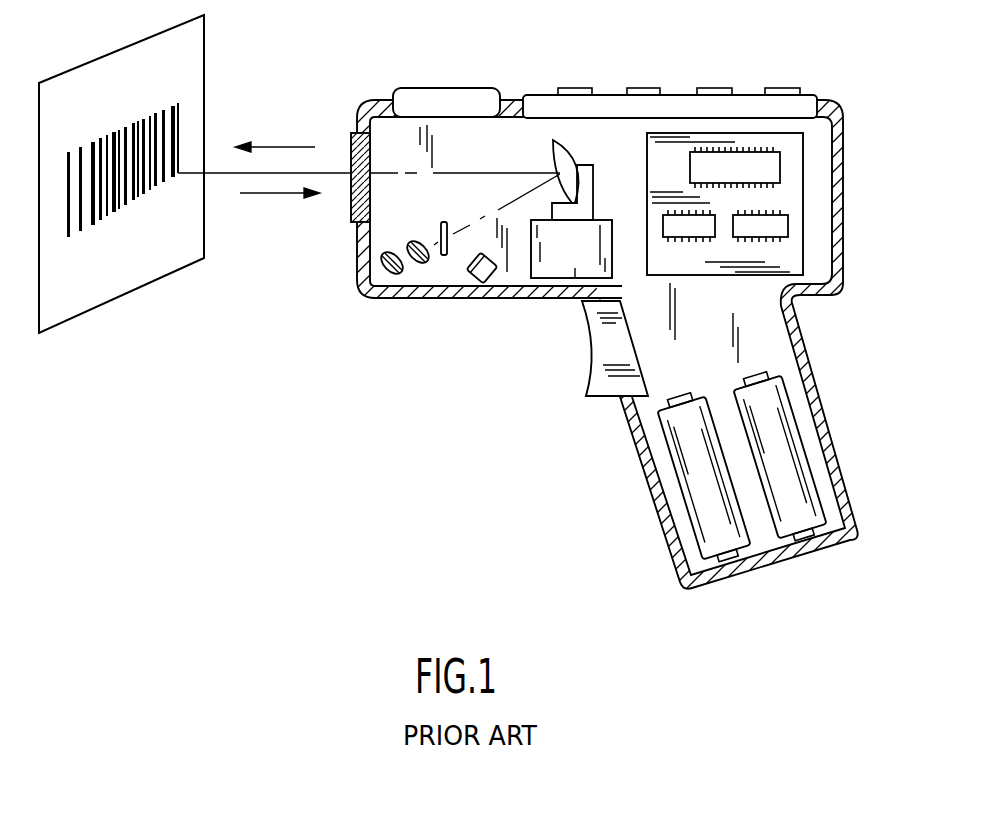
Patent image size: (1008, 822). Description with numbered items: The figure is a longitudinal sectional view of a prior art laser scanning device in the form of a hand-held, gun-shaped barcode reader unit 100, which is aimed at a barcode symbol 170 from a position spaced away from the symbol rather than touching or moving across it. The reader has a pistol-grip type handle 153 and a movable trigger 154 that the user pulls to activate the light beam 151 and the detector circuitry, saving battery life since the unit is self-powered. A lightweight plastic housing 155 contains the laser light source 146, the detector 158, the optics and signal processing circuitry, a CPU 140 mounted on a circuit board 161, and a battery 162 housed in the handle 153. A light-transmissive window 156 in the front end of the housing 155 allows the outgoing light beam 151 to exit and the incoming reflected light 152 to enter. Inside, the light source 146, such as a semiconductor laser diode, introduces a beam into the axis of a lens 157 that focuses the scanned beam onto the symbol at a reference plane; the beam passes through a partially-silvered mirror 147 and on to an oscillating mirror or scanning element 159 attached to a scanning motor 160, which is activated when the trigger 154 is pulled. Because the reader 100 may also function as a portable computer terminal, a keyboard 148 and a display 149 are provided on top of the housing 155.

The barcode reader unit 100 is at (598, 299).
The CPU 140 is at (700, 165).
The light source 146 is at (383, 266).
The partially-silvered mirror 147 is at (445, 256).
The keyboard 148 is at (752, 103).
The display 149 is at (418, 90).
The light beam 151 is at (270, 147).
The reflected light 152 is at (273, 198).
The handle 153 is at (652, 495).
The trigger 154 is at (582, 390).
The housing 155 is at (843, 227).
The light-transmissive window 156 is at (350, 147).
The lens 157 is at (417, 263).
The detector 158 is at (489, 279).
The scanning element 159 is at (575, 147).
The scanning motor 160 is at (577, 272).
The circuit board 161 is at (781, 155).
The battery 162 is at (783, 377).
The bar code symbol 170 is at (143, 118).